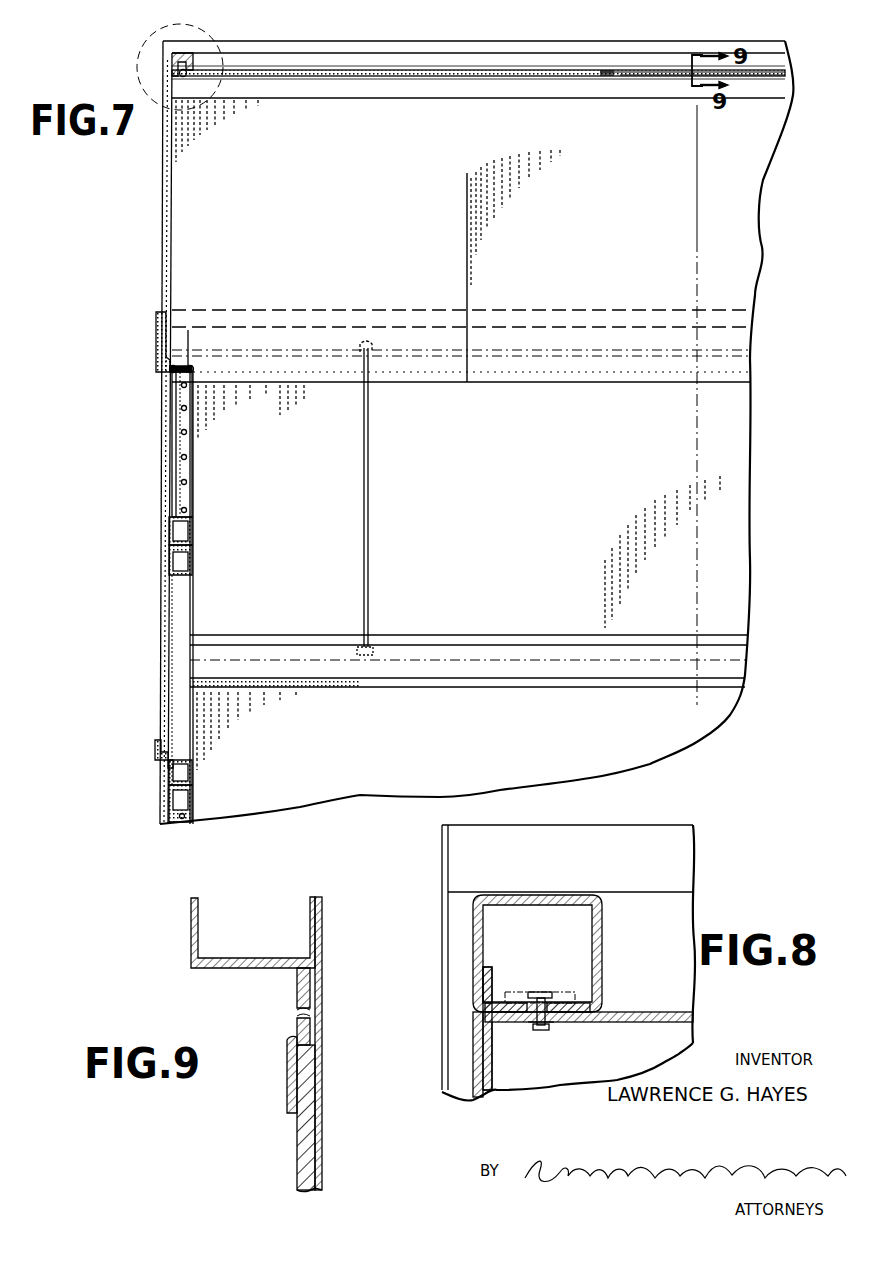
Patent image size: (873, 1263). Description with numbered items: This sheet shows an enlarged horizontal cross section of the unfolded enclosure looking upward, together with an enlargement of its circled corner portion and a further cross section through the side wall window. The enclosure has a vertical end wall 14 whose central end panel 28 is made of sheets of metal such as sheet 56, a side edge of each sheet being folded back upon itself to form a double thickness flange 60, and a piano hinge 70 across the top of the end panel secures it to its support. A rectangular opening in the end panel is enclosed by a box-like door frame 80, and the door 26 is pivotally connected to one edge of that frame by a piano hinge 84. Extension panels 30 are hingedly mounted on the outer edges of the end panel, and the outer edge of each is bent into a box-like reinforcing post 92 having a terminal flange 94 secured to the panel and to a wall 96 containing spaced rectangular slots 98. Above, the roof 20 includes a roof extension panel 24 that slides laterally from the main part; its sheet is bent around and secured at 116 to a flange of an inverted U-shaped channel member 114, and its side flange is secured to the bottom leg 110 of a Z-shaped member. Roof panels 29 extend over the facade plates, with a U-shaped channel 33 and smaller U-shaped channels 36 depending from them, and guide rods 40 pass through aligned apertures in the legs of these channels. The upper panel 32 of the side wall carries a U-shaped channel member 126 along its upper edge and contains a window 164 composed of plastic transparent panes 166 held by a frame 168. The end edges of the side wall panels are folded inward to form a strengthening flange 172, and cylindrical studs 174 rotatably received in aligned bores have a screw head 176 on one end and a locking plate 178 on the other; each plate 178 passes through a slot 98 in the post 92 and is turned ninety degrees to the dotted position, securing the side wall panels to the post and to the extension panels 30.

In FIG. 7, the end wall 14 is at (159, 704).
In FIG. 7, the roof 20 is at (564, 500).
In FIG. 7, the roof extension panel 24 is at (733, 213).
In FIG. 8, the roof extension panel 24 is at (568, 963).
In FIG. 7, the door 26 is at (165, 626).
In FIG. 7, the central end panel 28 is at (162, 437).
In FIG. 7, the roof panel 29 is at (720, 576).
In FIG. 7, the extension panel 30 is at (165, 244).
In FIG. 8, the extension panel 30 is at (478, 1060).
In FIG. 7, the upper panel 32 is at (455, 77).
In FIG. 8, the upper panel 32 is at (674, 1016).
In FIG. 7, the U-shaped channel 33 is at (445, 643).
In FIG. 7, the U-shaped channel 36 is at (598, 326).
In FIG. 7, the guide rod 40 is at (370, 523).
In FIG. 7, the sheet of metal 56 is at (166, 478).
In FIG. 7, the double thickness flange 60 is at (176, 375).
In FIG. 7, the piano hinge 70 is at (196, 448).
In FIG. 7, the door frame 80 is at (193, 531).
In FIG. 7, the piano hinge 84 is at (176, 563).
In FIG. 7, the reinforcing post 92 is at (195, 68).
In FIG. 8, the reinforcing post 92 is at (600, 947).
In FIG. 8, the terminal flange 94 is at (486, 984).
In FIG. 8, the wall 96 is at (500, 1003).
In FIG. 8, the rectangular slot 98 is at (560, 996).
In FIG. 7, the bottom leg 110 is at (342, 76).
In FIG. 7, the inverted U-shaped channel member 114 is at (588, 385).
In FIG. 7, the bent edge 116 is at (520, 384).
In FIG. 7, the U-shaped channel member 126 is at (503, 92).
In FIG. 9, the U-shaped channel member 126 is at (192, 926).
In FIG. 7, the window 164 is at (633, 77).
In FIG. 9, the window 164 is at (323, 1120).
In FIG. 7, the transparent pane 166 is at (762, 78).
In FIG. 9, the transparent pane 166 is at (312, 1141).
In FIG. 7, the frame 168 is at (610, 75).
In FIG. 9, the frame 168 is at (290, 1081).
In FIG. 8, the strengthening flange 172 is at (490, 1073).
In FIG. 8, the cylindrical stud 174 is at (548, 1029).
In FIG. 8, the screw head 176 is at (535, 1028).
In FIG. 8, the locking plate 178 is at (540, 992).